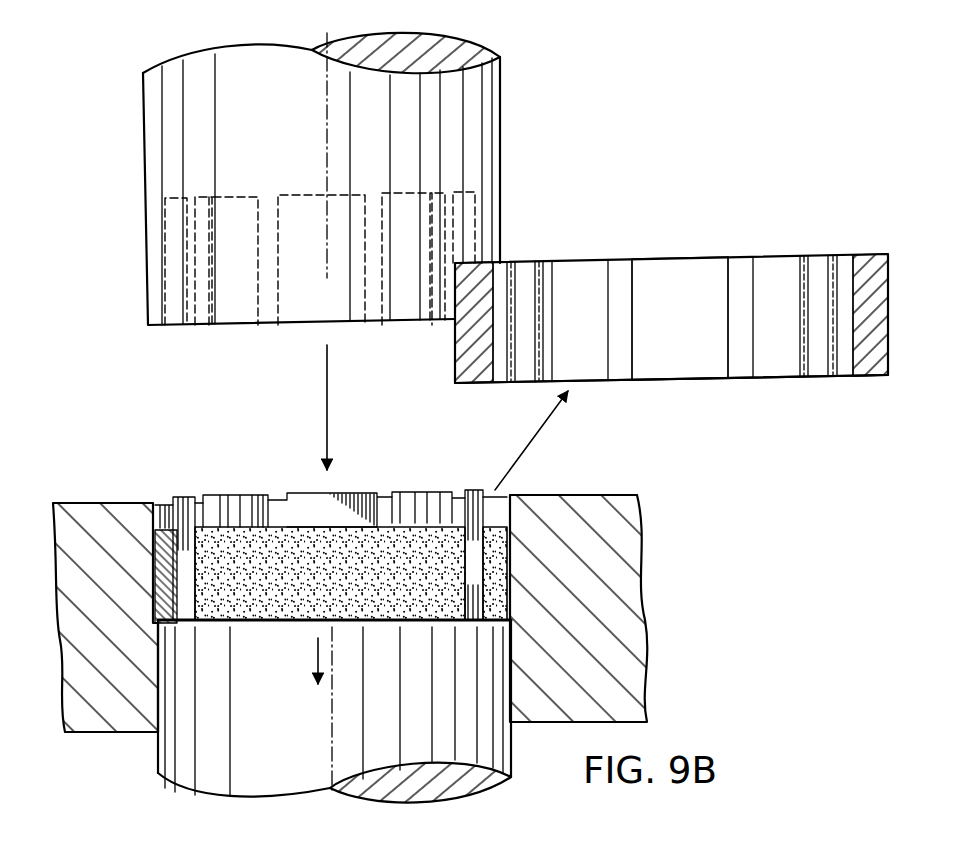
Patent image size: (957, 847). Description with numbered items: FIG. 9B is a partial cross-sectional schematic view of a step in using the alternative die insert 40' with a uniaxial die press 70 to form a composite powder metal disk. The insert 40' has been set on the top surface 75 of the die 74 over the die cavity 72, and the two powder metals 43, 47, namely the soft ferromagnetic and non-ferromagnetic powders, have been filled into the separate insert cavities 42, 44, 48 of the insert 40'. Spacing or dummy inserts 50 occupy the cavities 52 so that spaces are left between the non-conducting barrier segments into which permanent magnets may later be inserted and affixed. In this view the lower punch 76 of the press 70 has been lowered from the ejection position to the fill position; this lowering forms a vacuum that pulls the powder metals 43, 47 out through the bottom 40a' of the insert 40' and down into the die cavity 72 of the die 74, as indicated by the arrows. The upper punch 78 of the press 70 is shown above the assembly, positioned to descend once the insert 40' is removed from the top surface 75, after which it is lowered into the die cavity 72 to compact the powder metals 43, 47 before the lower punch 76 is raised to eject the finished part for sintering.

The uniaxial die press 70 is at (636, 106).
The upper punch 78 is at (276, 155).
The alternative die insert 40' is at (645, 318).
The bottom of the insert 40a' is at (671, 406).
The insert cavity 42 is at (682, 273).
The insert cavity 44 is at (843, 267).
The insert cavity 48 is at (500, 357).
The cavity for dummy insert 52 is at (525, 278).
The spacing or dummy insert 50 is at (222, 495).
The powder metal 43 is at (492, 490).
The die cavity 72 is at (508, 500).
The die 74 is at (368, 586).
The top surface of the die 75 is at (583, 492).
The powder metal 47 is at (155, 601).
The lower punch 76 is at (276, 733).